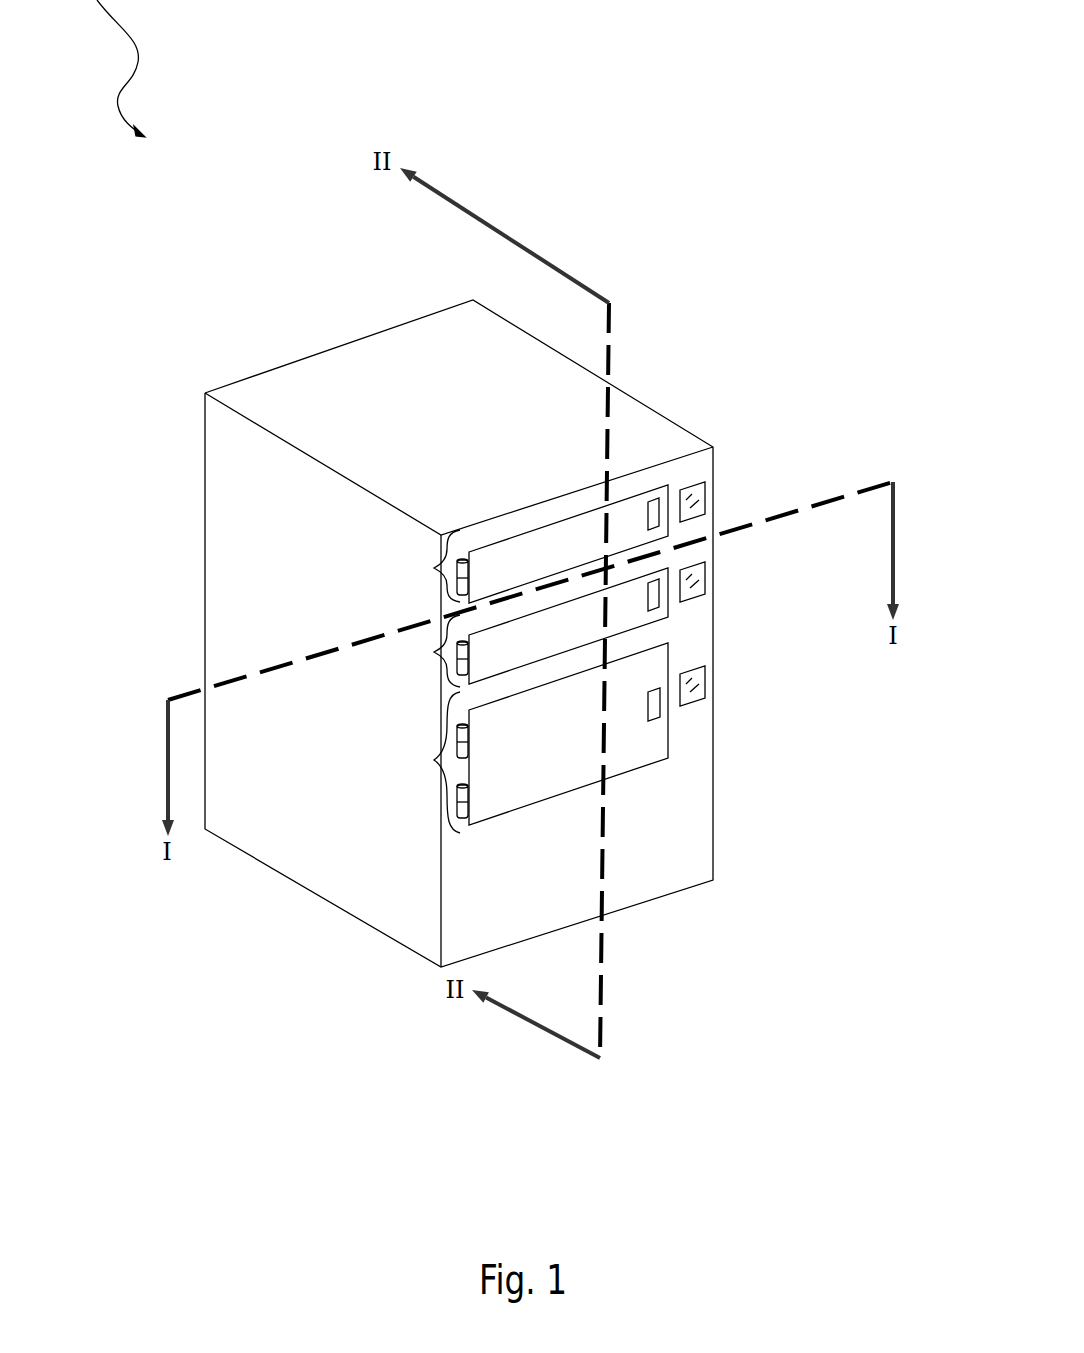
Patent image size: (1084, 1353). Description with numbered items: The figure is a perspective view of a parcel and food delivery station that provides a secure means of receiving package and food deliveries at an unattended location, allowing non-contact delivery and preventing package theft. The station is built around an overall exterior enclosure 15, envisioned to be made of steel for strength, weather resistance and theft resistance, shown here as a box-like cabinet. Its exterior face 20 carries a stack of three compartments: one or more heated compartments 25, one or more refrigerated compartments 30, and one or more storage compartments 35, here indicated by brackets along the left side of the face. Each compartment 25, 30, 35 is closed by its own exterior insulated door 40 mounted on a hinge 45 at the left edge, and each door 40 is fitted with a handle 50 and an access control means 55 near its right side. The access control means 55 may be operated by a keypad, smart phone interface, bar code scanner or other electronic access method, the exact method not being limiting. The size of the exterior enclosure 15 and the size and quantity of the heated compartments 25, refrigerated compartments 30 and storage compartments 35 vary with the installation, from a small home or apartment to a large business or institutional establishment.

The exterior enclosure 15 is at (585, 395).
The exterior face 20 is at (700, 850).
The heated compartment 25 is at (435, 568).
The refrigerated compartment 30 is at (437, 650).
The storage compartment 35 is at (437, 760).
The exterior insulated door 40 is at (628, 522).
The hinge 45 is at (462, 562).
The handle 50 is at (659, 512).
The access control means 55 is at (692, 497).